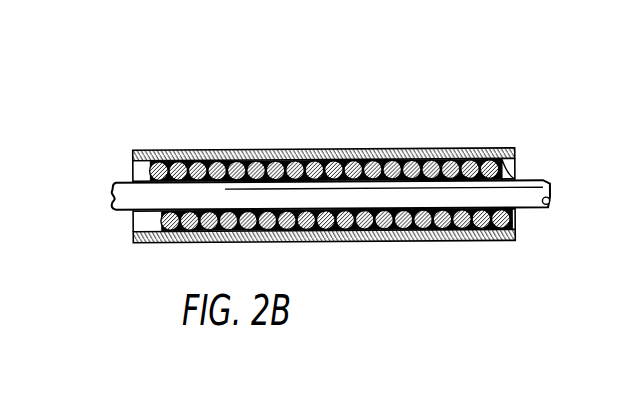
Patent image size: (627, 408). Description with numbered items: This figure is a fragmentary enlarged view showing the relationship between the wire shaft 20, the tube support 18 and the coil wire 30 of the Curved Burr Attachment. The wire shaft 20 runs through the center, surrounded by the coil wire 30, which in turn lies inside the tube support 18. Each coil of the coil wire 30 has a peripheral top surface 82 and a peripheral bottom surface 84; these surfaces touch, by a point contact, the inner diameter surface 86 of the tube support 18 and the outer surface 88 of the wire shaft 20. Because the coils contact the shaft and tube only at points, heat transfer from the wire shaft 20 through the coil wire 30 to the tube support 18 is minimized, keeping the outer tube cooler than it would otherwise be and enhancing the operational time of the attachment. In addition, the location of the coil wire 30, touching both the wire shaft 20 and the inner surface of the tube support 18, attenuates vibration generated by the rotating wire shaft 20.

The tube support 18 is at (477, 149).
The peripheral top surface of coil 82 is at (417, 162).
The coil wire 30 is at (359, 229).
The outer surface of wire shaft 88 is at (127, 177).
The inner diameter surface of tube support 86 is at (506, 174).
The peripheral bottom surface of coil 84 is at (516, 215).
The wire shaft 20 is at (551, 203).